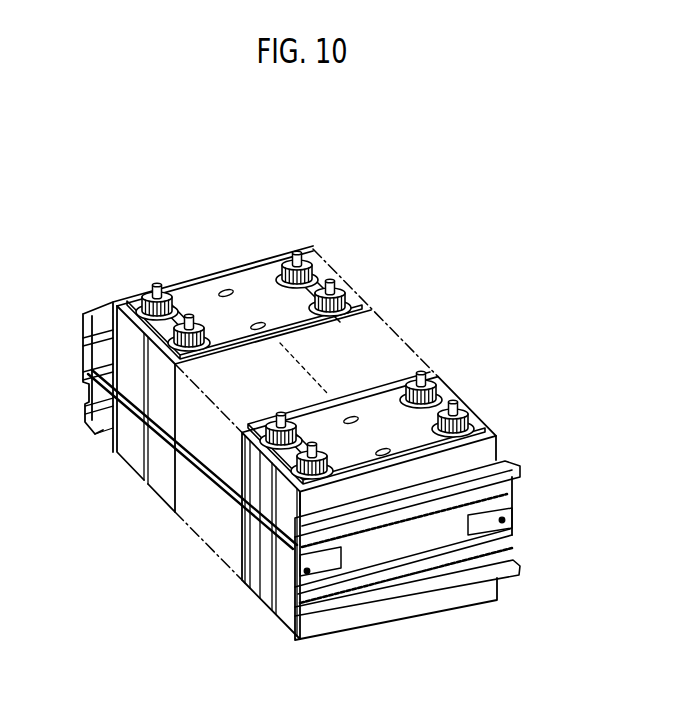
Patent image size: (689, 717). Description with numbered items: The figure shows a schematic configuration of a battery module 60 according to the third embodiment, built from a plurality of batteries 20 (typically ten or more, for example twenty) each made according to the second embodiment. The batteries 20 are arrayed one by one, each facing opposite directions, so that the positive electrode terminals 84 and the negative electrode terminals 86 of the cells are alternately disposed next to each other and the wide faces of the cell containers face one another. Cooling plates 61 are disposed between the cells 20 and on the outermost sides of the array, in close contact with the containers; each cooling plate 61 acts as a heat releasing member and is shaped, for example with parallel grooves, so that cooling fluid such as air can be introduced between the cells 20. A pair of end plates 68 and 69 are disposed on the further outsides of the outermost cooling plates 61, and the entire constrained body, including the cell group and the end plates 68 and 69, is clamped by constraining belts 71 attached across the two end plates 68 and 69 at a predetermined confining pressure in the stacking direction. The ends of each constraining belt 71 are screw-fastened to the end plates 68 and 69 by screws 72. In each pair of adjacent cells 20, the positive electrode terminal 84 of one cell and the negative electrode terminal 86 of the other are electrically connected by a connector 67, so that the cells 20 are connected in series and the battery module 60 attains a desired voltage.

The battery 20 is at (275, 317).
The battery module 60 is at (421, 307).
The cooling plate 61 is at (484, 423).
The connector 67 is at (175, 317).
The end plate 68 is at (508, 458).
The end plate 69 is at (98, 316).
The constraining belt 71 is at (261, 537).
The screw 72 is at (506, 520).
The positive electrode terminal 84 is at (157, 283).
The negative electrode terminal 86 is at (190, 316).